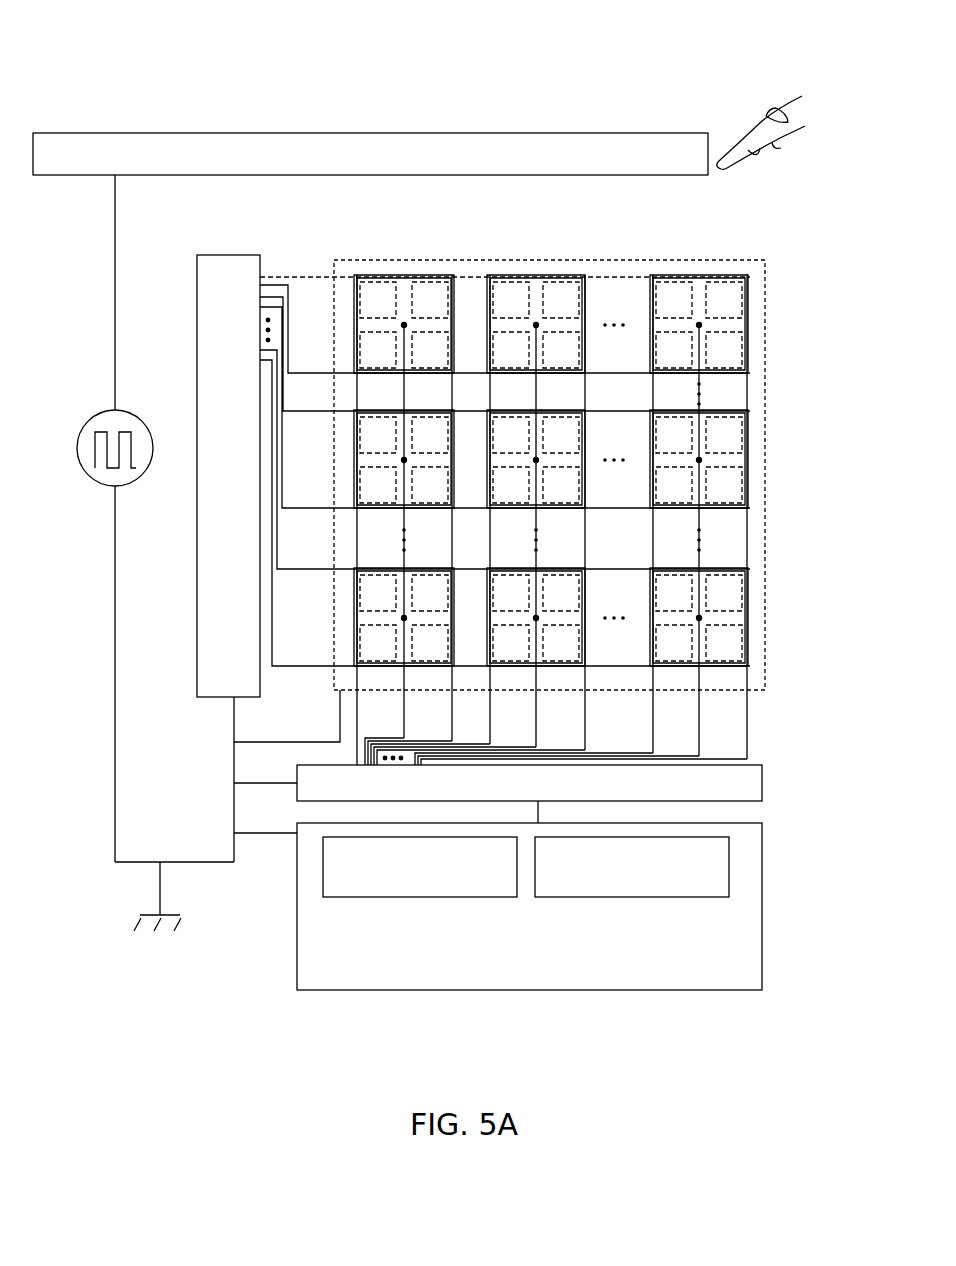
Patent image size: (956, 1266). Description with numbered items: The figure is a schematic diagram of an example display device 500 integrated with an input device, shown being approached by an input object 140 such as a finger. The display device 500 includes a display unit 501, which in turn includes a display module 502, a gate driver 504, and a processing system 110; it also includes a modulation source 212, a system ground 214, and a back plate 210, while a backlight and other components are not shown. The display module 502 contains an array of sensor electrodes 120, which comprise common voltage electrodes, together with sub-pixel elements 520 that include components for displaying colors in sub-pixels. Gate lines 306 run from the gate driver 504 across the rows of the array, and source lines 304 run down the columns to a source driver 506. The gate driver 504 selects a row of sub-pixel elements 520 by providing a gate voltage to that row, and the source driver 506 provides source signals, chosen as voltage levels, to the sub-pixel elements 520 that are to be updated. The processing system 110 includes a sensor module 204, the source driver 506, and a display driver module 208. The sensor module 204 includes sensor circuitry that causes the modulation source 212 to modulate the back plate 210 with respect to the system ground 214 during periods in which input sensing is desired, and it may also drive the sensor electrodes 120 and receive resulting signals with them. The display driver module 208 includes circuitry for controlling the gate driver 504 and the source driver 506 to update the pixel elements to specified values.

The display device 500 is at (677, 59).
The input object 140 is at (786, 120).
The back plate 210 is at (370, 154).
The modulation source 212 is at (133, 414).
The system ground 214 is at (158, 882).
The gate driver 504 is at (268, 558).
The gate line 306 is at (299, 283).
The display module 502 is at (765, 313).
The display unit 501 is at (779, 464).
The source line 304 is at (748, 547).
The sensor electrodes 120 is at (740, 276).
The sub-pixel elements 520 is at (554, 278).
The source driver 506 is at (529, 794).
The processing system 110 is at (529, 906).
The sensor module 204 is at (420, 867).
The display driver module 208 is at (632, 867).